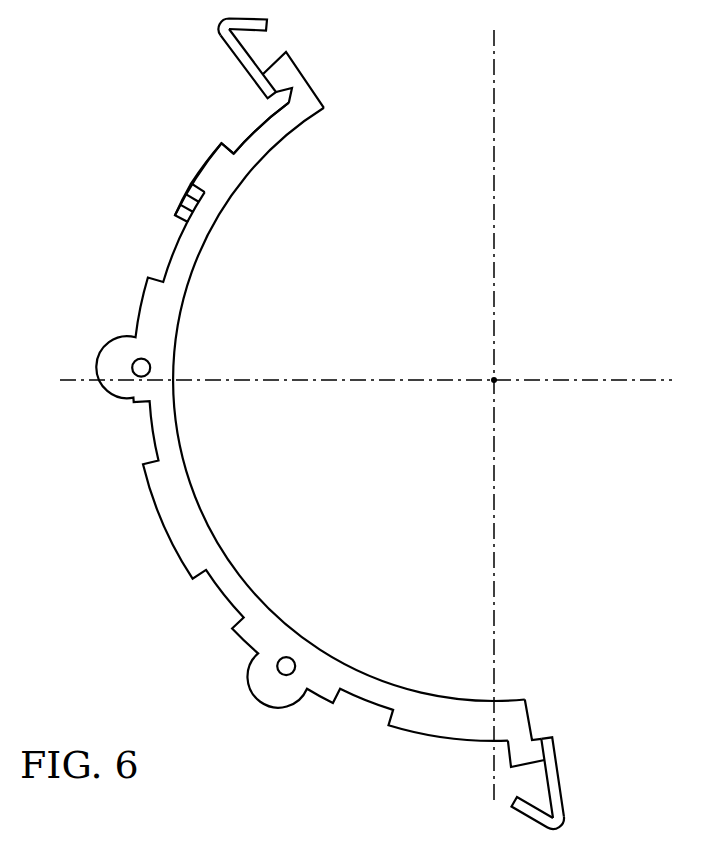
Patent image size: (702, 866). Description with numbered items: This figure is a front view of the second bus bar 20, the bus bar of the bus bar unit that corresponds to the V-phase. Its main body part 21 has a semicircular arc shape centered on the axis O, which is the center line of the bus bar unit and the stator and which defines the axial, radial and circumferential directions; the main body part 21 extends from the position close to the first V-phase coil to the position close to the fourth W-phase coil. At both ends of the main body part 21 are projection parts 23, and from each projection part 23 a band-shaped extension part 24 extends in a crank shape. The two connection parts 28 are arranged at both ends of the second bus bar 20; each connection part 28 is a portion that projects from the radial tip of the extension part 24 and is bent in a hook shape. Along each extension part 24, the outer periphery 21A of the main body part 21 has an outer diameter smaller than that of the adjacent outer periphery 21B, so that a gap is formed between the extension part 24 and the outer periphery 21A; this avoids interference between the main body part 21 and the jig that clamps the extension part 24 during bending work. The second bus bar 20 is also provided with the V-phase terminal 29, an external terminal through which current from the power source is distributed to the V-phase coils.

The second bus bar 20 is at (343, 420).
The main body part 21 is at (167, 313).
The outer periphery 21A is at (253, 128).
The outer periphery 21B is at (210, 152).
The projection part 23 is at (297, 88).
The extension part 24 is at (236, 67).
The connection part 28 is at (218, 25).
The V-phase terminal 29 is at (183, 200).
The axis O is at (500, 377).